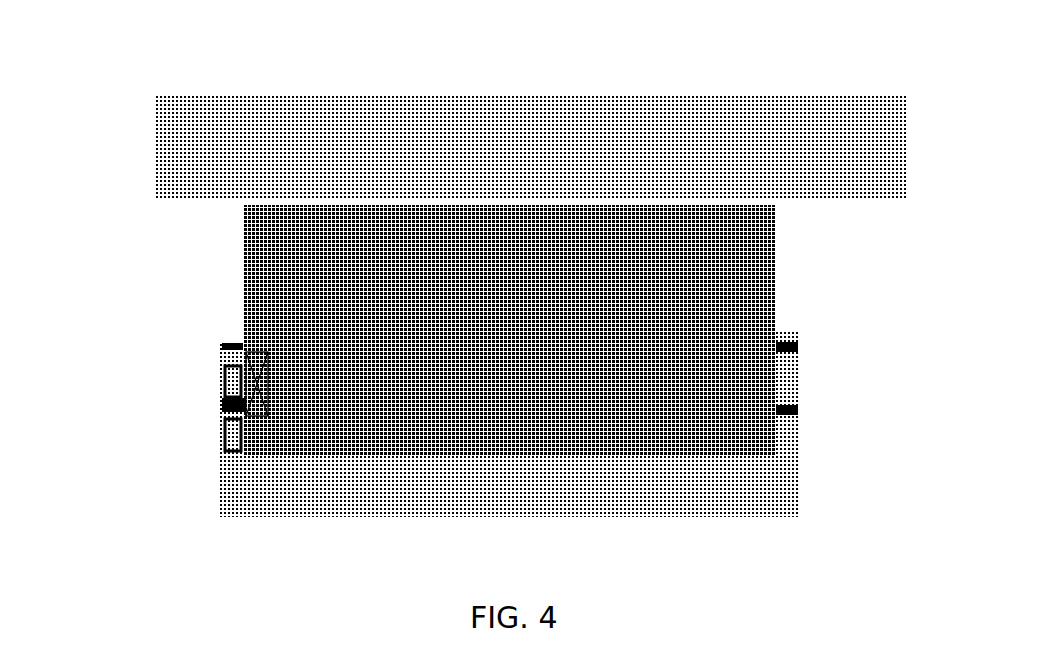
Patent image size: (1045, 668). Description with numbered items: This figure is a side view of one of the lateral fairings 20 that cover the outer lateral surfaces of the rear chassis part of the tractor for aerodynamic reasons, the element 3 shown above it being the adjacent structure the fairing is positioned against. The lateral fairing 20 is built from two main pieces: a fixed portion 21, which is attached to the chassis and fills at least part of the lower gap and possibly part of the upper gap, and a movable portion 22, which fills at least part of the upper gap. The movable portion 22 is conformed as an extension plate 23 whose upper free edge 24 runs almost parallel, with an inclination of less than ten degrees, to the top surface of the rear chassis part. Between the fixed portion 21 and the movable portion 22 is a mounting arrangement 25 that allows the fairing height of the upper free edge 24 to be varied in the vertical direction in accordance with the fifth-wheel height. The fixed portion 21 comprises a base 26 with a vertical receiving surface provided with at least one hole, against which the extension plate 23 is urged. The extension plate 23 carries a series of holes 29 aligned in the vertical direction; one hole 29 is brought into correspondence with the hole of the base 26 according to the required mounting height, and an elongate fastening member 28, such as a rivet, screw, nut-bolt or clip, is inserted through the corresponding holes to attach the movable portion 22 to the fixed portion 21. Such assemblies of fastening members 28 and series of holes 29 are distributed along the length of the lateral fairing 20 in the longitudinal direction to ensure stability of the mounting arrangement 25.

The substrate 3 is at (383, 127).
The lateral fairing 20 is at (177, 343).
The fixed portion 21 is at (752, 484).
The movable portion 22 is at (768, 268).
The extension plate 23 is at (313, 287).
The upper free edge 24 is at (715, 205).
The mounting arrangement 25 is at (226, 336).
The base 26 is at (800, 345).
The elongate fastening member 28 is at (358, 368).
The hole 29 is at (227, 391).